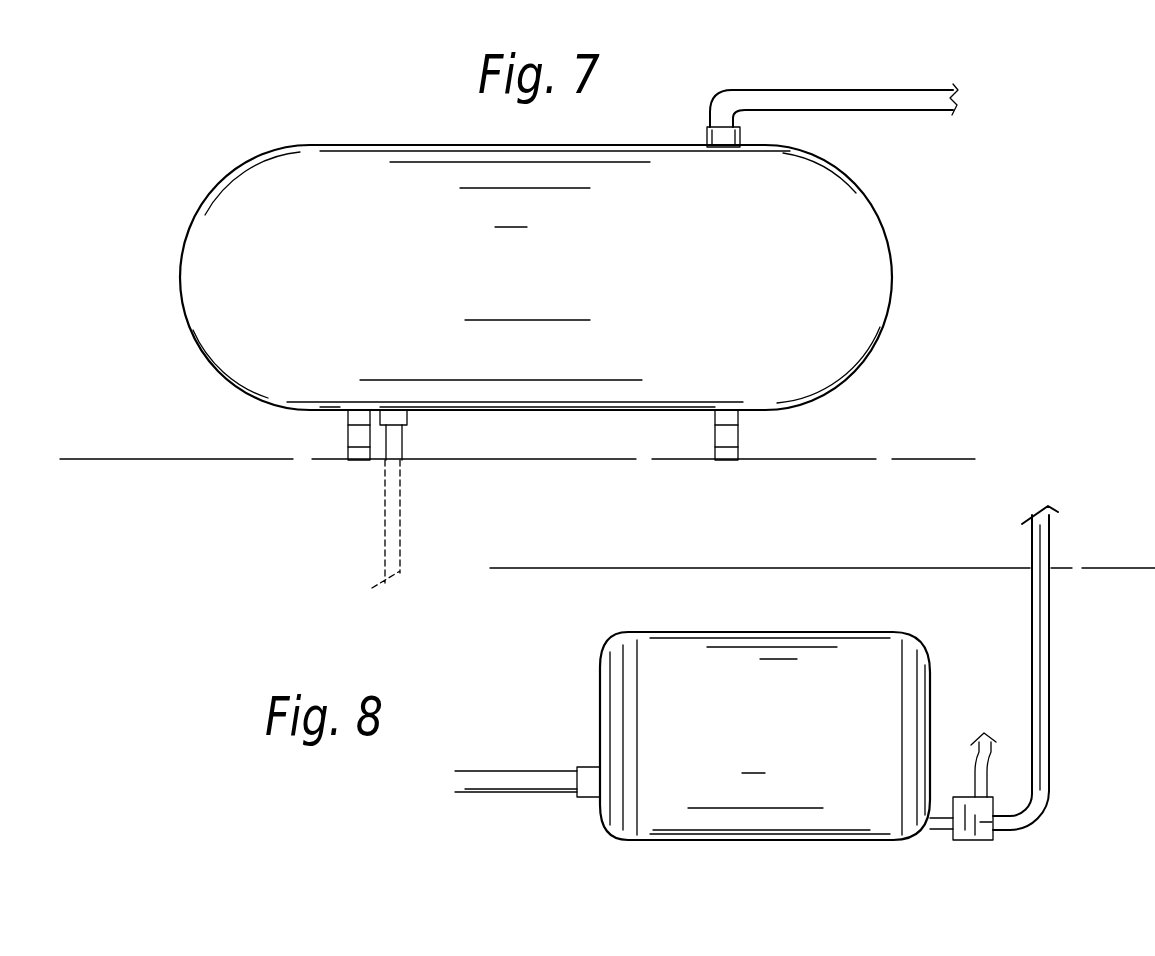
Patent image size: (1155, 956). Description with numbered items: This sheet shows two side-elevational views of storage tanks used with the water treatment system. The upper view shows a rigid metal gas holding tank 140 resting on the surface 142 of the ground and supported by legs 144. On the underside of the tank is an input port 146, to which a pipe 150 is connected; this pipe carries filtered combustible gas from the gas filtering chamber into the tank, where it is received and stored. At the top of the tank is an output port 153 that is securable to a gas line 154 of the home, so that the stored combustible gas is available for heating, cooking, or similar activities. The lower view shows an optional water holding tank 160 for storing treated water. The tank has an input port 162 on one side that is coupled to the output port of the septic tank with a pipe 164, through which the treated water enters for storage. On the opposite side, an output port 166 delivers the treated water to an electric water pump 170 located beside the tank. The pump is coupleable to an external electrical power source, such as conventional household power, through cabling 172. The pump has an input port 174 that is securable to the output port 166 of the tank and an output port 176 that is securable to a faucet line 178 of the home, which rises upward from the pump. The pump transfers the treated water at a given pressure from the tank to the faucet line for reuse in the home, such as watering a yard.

In FIG. 7, the gas holding tank 140 is at (865, 230).
In FIG. 7, the surface of the ground 142 is at (908, 460).
In FIG. 7, the legs 144 is at (738, 445).
In FIG. 7, the input port 146 is at (405, 418).
In FIG. 7, the pipe 150 is at (385, 518).
In FIG. 7, the output port 153 is at (709, 127).
In FIG. 7, the gas line 154 is at (837, 92).
In FIG. 8, the water holding tank 160 is at (850, 783).
In FIG. 8, the input port 162 is at (590, 797).
In FIG. 8, the pipe 164 is at (522, 771).
In FIG. 8, the output port 166 is at (938, 818).
In FIG. 8, the electric water pump 170 is at (993, 840).
In FIG. 8, the cabling 172 is at (984, 795).
In FIG. 8, the input port 174 is at (953, 835).
In FIG. 8, the output port 176 is at (998, 833).
In FIG. 8, the faucet line 178 is at (1043, 652).